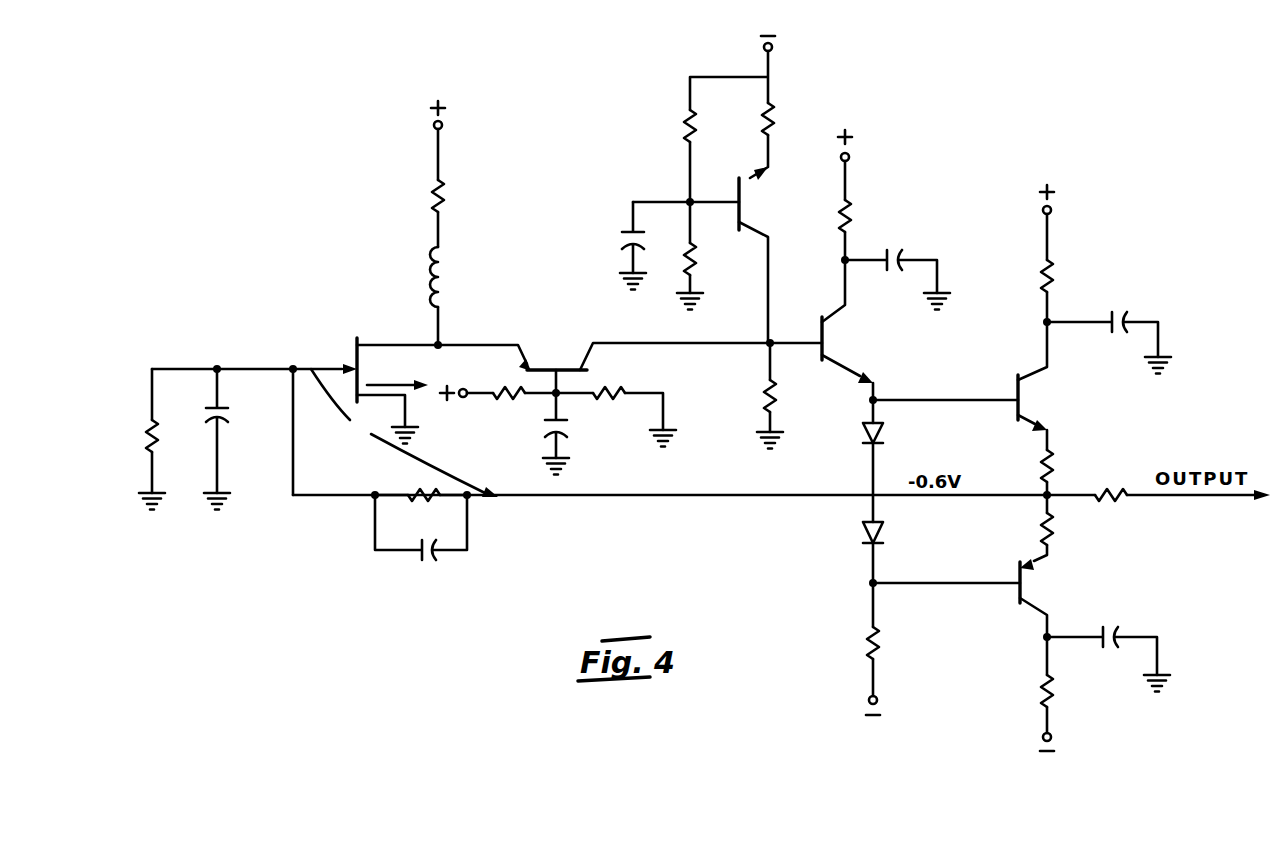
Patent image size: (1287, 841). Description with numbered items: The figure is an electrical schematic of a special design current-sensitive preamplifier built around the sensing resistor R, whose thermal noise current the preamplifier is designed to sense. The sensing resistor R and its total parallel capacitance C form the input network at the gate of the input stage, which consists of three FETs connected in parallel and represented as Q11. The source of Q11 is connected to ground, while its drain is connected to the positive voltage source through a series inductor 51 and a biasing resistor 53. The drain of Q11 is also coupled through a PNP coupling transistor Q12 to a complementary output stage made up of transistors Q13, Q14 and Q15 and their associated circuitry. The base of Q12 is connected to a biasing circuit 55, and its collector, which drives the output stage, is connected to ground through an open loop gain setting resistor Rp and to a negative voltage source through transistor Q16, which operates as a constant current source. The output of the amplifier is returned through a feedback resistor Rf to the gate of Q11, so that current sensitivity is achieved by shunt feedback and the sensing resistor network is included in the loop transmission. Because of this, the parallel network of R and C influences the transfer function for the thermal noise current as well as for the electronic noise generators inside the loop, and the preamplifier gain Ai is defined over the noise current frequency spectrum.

The series inductor 51 is at (446, 290).
The biasing resistor 53 is at (446, 207).
The biasing circuit 55 is at (518, 429).
The input stage FETs Q11 is at (402, 380).
The PNP coupling transistor Q12 is at (630, 409).
The output stage transistor Q13 is at (886, 265).
The output stage transistor Q14 is at (1094, 342).
The output stage transistor Q15 is at (1095, 623).
The constant current source transistor Q16 is at (698, 189).
The sensing resistor R is at (144, 439).
The total parallel capacitance C is at (227, 439).
The feedback resistor Rf is at (421, 511).
The open loop gain setting resistor Rp is at (784, 394).
The preamplifier gain Ai is at (404, 433).